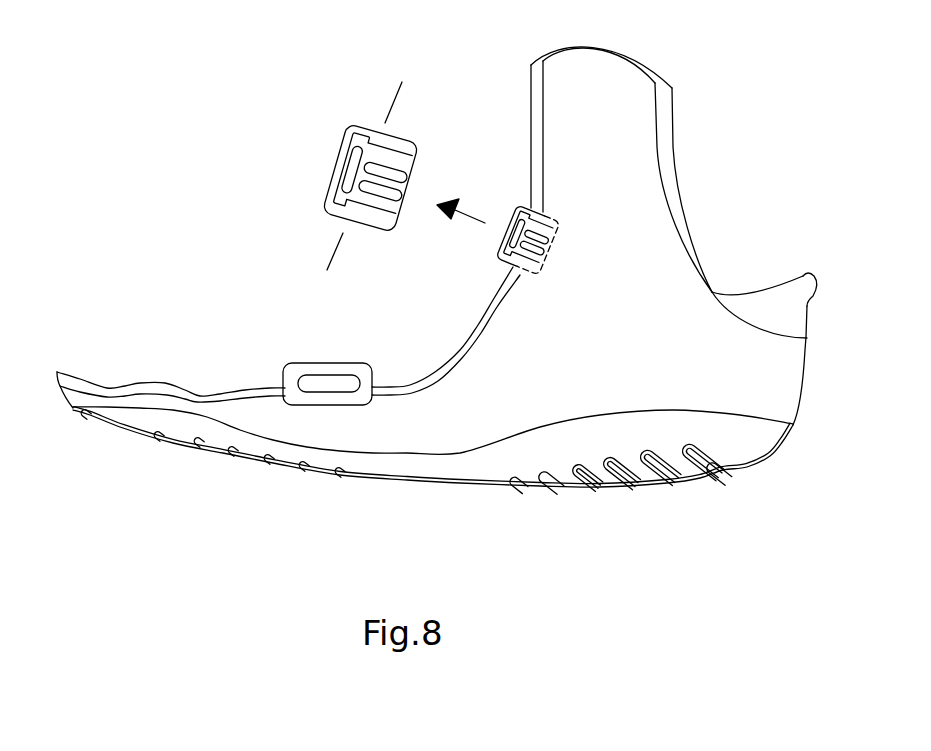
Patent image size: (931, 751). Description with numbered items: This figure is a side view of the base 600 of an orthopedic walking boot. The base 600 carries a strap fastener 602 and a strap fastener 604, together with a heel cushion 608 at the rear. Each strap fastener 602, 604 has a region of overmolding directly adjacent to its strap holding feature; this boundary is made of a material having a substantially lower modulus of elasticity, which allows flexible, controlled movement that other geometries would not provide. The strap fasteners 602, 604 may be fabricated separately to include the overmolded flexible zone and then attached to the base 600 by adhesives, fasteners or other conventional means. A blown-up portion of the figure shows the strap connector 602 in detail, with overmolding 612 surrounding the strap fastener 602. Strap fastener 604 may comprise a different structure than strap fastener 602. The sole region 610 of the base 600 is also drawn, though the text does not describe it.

The base 600 is at (643, 163).
The strap fastener 602 is at (368, 200).
The strap fastener 604 is at (325, 362).
The heel cushion 608 is at (805, 285).
The sole structure 610 is at (735, 442).
The overmolding 612 is at (360, 130).